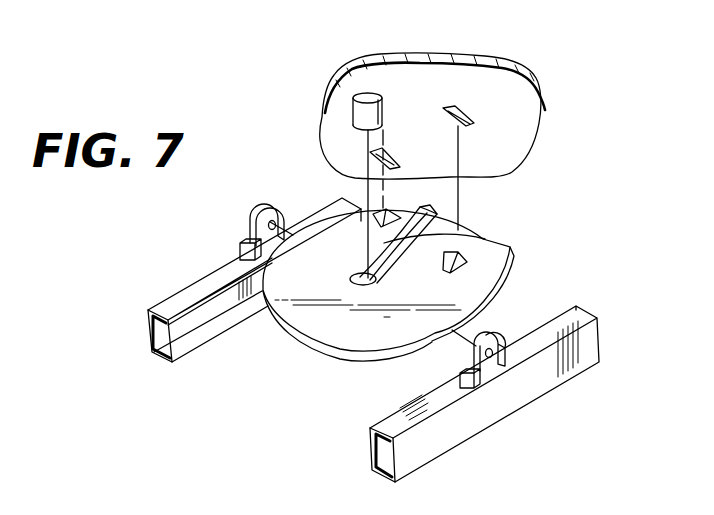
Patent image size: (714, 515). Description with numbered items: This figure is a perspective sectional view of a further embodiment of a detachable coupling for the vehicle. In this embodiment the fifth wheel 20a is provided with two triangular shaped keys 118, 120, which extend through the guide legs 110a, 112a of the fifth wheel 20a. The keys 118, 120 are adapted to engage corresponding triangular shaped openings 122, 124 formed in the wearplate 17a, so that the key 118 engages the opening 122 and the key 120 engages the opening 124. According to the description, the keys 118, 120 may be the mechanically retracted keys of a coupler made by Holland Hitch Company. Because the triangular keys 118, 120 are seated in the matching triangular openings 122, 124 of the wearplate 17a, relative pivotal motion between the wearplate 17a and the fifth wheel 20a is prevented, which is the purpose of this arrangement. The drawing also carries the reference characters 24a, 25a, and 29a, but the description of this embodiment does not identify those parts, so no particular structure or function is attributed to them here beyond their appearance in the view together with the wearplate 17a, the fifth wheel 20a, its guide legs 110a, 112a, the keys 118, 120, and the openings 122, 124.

The wearplate 17a is at (440, 77).
The cylinder / post 24a is at (354, 117).
The triangular shaped opening 124 is at (465, 115).
The triangular shaped opening 122 is at (383, 158).
The triangular shaped key 118 is at (374, 222).
The fifth wheel 20a is at (332, 332).
The guide leg 110a is at (443, 211).
The guide leg 112a is at (503, 243).
The triangular shaped key 120 is at (468, 262).
The pivot bracket 29a is at (471, 331).
The channel rail 25a is at (192, 340).